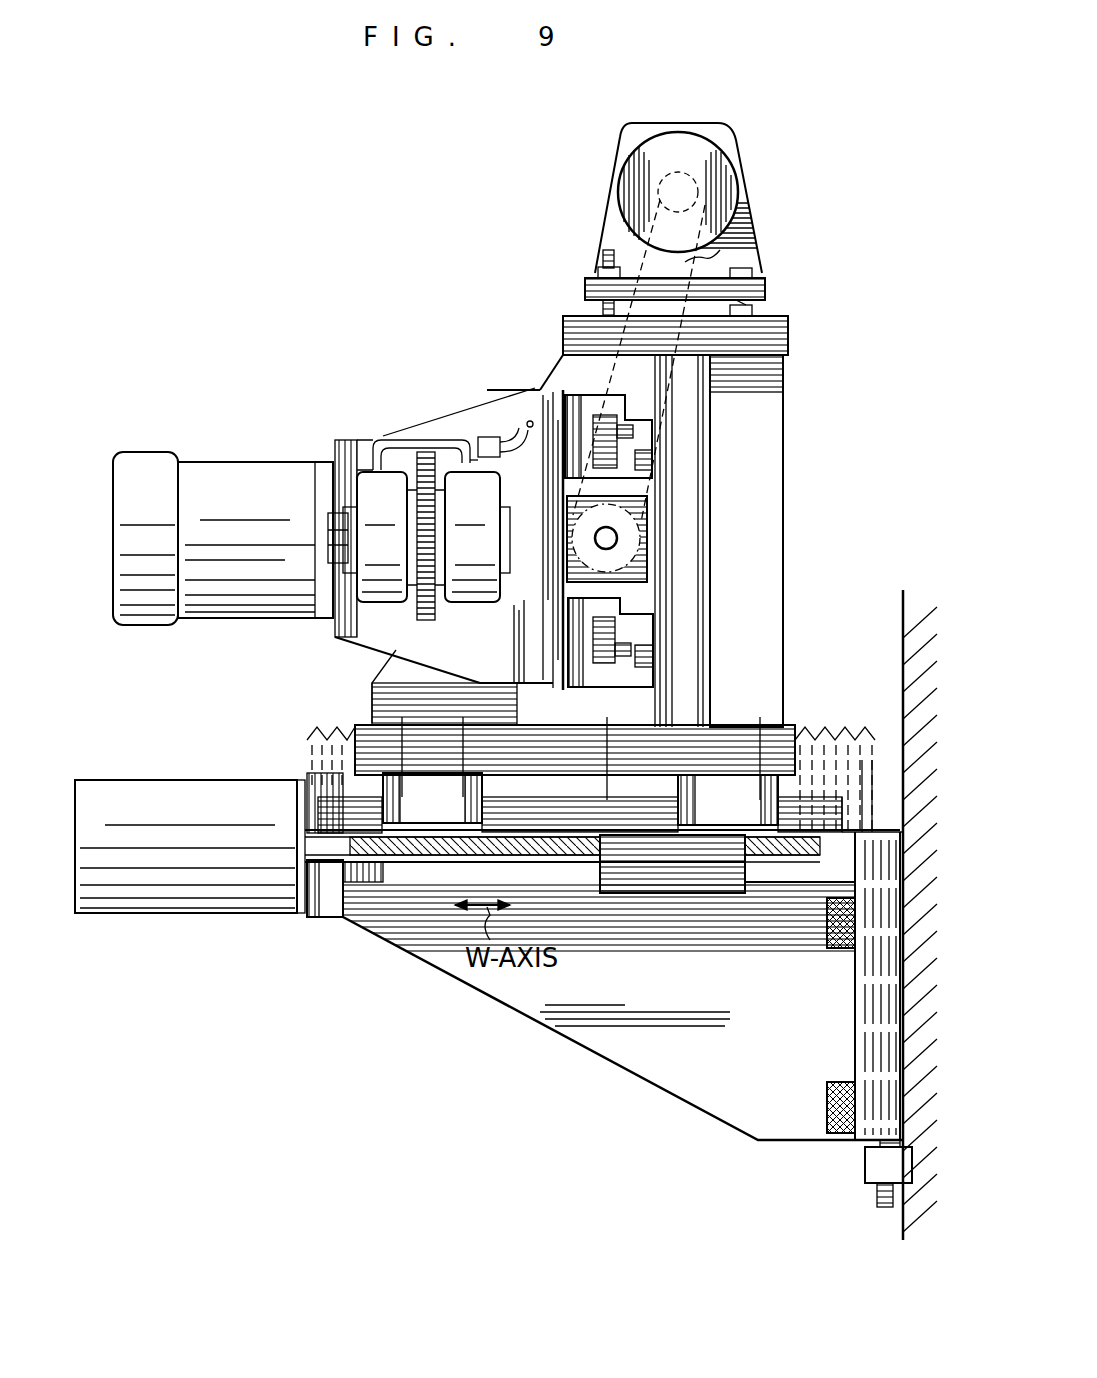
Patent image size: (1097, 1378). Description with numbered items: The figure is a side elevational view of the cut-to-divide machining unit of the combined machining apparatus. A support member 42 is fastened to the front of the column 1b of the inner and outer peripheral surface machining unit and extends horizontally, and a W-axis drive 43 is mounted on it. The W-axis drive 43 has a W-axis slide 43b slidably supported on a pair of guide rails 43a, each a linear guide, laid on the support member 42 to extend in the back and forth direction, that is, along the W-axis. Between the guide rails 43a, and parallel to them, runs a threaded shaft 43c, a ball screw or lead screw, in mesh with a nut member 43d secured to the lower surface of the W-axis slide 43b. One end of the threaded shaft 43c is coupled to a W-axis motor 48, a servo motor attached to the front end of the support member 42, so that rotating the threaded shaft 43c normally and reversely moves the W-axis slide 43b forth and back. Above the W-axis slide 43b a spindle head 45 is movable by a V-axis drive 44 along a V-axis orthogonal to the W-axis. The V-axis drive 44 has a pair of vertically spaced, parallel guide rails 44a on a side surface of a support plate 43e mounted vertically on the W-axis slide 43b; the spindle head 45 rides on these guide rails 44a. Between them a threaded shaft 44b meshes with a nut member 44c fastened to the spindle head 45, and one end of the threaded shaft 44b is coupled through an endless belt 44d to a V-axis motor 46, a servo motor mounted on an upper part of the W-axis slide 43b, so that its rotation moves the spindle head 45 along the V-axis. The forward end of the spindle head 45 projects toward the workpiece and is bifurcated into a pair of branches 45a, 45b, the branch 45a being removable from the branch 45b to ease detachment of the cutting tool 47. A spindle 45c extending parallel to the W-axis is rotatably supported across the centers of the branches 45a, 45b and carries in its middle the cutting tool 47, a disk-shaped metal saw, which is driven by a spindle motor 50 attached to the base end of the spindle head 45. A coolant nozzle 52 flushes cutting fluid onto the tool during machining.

The column 1b is at (916, 690).
The support member 42 is at (580, 1012).
The W-axis drive 43 is at (410, 888).
The guide rails 43a is at (345, 805).
The W-axis slide 43b is at (428, 733).
The threaded shaft 43c is at (573, 862).
The nut member 43d is at (682, 873).
The support plate 43e is at (705, 622).
The V-axis drive 44 is at (728, 406).
The guide rails 44a is at (640, 446).
The threaded shaft 44b is at (610, 538).
The nut member 44c is at (572, 572).
The endless belt 44d is at (722, 240).
The spindle head 45 is at (480, 395).
The branch 45a is at (372, 592).
The branch 45b is at (470, 600).
The spindle 45c is at (408, 500).
The V-axis motor 46 is at (715, 188).
The cutting tool 47 is at (410, 497).
The W-axis motor 48 is at (168, 805).
The spindle motor 50 is at (215, 478).
The coolant nozzle 52 is at (487, 443).